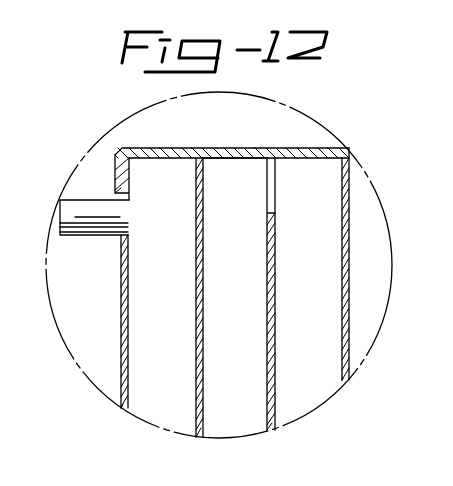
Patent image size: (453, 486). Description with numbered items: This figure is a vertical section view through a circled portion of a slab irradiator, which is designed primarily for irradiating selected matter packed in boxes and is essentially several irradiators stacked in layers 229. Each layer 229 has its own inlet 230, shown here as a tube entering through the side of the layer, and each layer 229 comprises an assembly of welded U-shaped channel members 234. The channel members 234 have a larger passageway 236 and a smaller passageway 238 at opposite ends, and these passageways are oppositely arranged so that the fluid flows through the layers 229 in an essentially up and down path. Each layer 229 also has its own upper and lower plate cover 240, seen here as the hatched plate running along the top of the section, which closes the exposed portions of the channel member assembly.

The layer 229 is at (118, 367).
The inlet 230 is at (112, 220).
The U-shaped channel member 234 is at (142, 304).
The larger passageway 236 is at (273, 213).
The smaller passageway 238 is at (205, 161).
The plate cover 240 is at (269, 133).